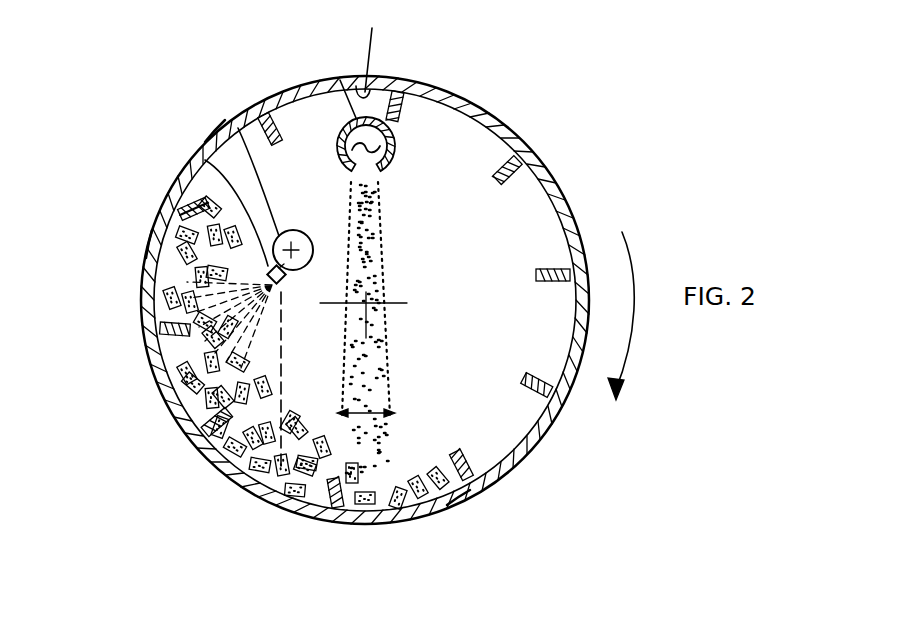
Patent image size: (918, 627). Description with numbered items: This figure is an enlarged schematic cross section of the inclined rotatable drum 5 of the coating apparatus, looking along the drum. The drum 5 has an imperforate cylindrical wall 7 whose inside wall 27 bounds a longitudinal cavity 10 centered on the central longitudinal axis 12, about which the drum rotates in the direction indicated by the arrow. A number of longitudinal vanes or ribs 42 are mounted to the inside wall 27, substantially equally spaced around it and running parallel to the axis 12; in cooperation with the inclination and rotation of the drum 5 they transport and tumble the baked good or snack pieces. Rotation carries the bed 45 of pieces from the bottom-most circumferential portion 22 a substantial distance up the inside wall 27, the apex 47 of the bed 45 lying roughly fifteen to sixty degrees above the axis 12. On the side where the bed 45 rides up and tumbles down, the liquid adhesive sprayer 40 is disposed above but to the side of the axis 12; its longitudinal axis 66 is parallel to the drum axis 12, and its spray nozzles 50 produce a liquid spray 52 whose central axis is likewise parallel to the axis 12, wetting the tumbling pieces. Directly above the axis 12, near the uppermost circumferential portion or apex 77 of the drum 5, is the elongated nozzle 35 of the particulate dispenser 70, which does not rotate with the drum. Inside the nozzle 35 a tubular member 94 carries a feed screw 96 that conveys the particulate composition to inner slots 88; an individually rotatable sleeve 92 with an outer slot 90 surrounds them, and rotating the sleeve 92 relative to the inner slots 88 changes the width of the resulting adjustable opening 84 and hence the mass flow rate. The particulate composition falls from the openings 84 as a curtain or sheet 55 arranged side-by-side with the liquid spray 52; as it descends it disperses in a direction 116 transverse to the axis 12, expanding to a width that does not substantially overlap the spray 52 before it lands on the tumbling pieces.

The rotatable drum 5 is at (147, 258).
The cylindrical wall 7 is at (205, 142).
The longitudinal cavity 10 is at (481, 228).
The central longitudinal axis 12 is at (372, 305).
The bottom-most circumferential portion 22 is at (447, 505).
The inside wall 27 is at (172, 403).
The particulate dispenser nozzle 35 is at (396, 142).
The liquid adhesive sprayer 40 is at (293, 232).
The longitudinal vanes 42 is at (269, 112).
The bed of pieces 45 is at (205, 352).
The apex of the bed 47 is at (188, 205).
The spray nozzles 50 is at (205, 160).
The liquid spray 52 is at (282, 324).
The particulate composition curtain 55 is at (382, 255).
The longitudinal axis of the sprayer 66 is at (240, 130).
The particulate dispenser 70 is at (712, 612).
The apex of the drum 77 is at (373, 49).
The adjustable openings 84 is at (366, 193).
The inner slots 88 is at (372, 178).
The outer slot 90 is at (357, 175).
The rotatable sleeve 92 is at (396, 148).
The tubular member 94 is at (392, 132).
The feed screw 96 is at (356, 120).
The transverse dispersion direction 116 is at (390, 410).